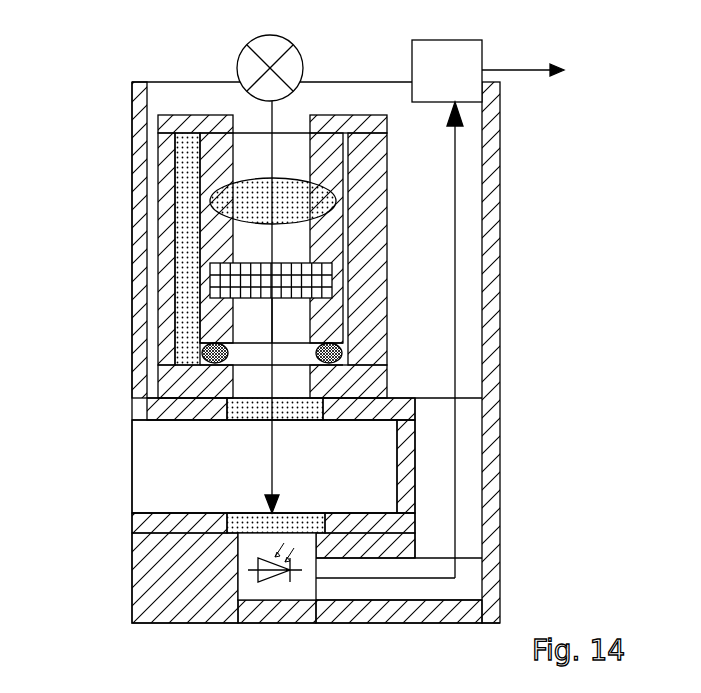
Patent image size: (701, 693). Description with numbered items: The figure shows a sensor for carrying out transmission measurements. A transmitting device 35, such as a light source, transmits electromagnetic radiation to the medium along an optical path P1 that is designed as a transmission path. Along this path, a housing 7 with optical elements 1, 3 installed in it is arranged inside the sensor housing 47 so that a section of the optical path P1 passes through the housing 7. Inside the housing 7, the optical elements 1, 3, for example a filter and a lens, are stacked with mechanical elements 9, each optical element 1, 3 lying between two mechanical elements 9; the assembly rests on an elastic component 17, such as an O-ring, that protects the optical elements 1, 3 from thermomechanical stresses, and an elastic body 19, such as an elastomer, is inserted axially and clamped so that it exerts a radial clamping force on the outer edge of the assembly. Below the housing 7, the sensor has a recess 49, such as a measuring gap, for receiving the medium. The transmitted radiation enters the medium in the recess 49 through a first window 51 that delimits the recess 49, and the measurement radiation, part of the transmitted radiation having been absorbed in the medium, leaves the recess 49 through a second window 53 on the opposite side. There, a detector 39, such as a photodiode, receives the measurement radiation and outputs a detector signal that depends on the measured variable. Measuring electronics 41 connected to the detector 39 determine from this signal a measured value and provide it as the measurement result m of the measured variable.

The optical element 1 is at (320, 283).
The optical element 3 is at (312, 204).
The housing 7 is at (336, 272).
The mechanical element 9 is at (332, 163).
The elastic component 17 is at (344, 349).
The elastic body 19 is at (190, 250).
The transmitting device 35 is at (250, 64).
The detector 39 is at (247, 580).
The measuring electronics 41 is at (459, 75).
The sensor housing 47 is at (132, 173).
The recess 49 is at (334, 478).
The first window 51 is at (240, 419).
The second window 53 is at (233, 515).
The optical path P1 is at (270, 327).
The measurement result m is at (523, 62).